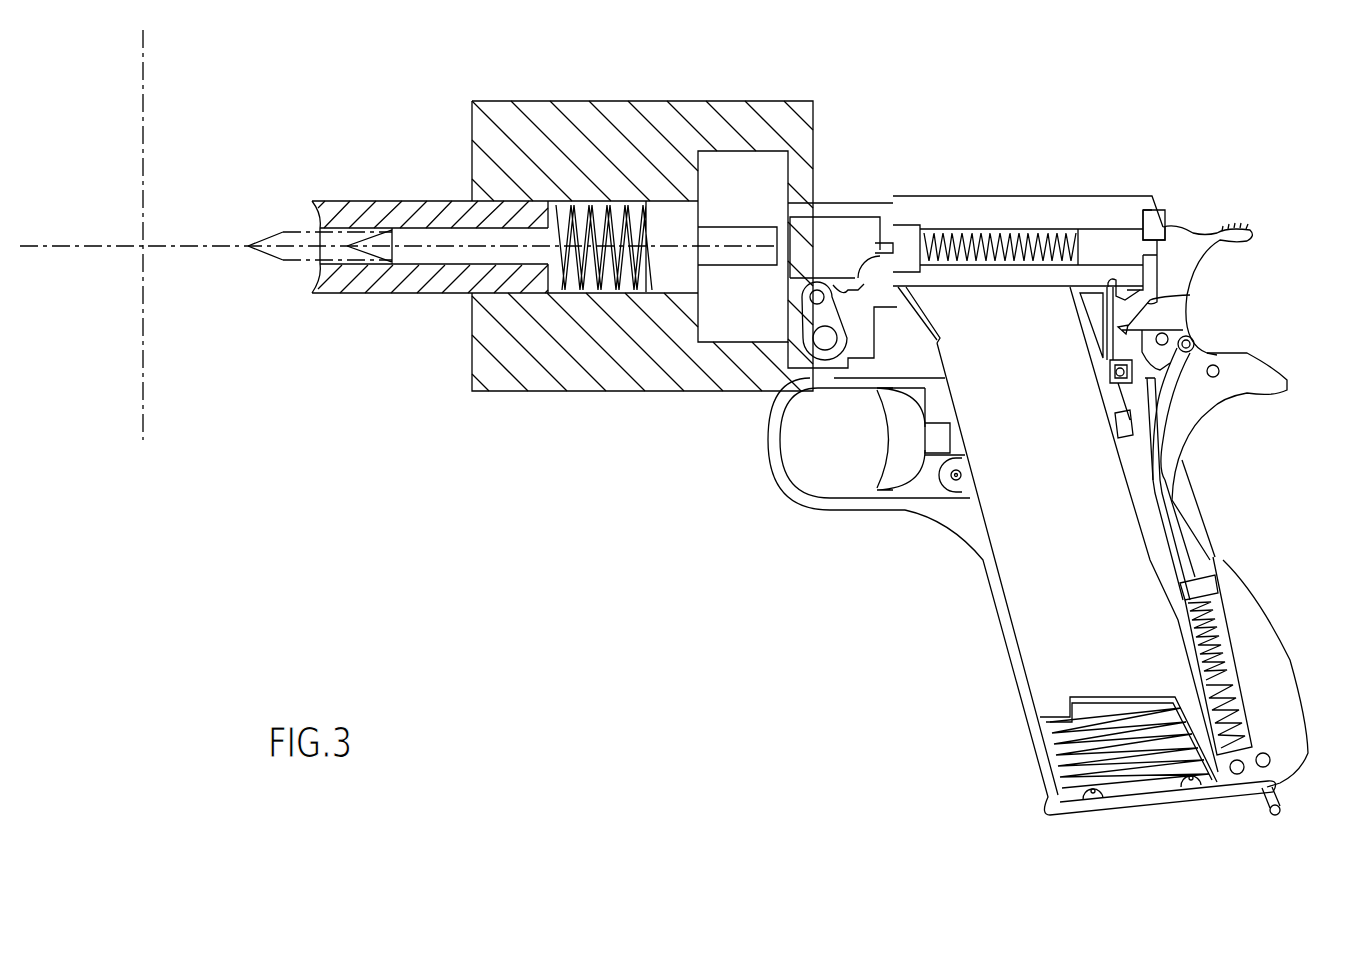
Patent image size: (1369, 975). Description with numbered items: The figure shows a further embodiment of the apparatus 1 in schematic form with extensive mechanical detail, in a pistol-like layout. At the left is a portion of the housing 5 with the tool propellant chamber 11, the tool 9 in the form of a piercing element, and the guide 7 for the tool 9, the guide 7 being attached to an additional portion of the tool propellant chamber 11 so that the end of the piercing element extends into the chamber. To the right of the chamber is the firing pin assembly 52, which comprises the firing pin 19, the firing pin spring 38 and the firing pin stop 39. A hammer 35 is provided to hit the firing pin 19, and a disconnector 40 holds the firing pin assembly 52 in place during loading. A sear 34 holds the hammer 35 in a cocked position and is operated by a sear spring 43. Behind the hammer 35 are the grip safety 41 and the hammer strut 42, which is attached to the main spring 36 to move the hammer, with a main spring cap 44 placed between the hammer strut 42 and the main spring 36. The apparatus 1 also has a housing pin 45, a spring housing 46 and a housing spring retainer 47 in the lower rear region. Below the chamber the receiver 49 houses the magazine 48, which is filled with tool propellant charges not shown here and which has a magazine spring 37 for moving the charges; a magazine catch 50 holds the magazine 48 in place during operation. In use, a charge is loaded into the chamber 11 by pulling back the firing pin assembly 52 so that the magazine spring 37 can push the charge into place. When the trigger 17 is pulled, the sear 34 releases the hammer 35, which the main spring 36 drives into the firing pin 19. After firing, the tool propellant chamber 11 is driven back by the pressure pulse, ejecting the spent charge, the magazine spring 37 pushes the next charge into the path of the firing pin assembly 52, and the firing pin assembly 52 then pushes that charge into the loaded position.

The apparatus 1 is at (707, 441).
The housing 5 is at (612, 105).
The guide 7 is at (360, 290).
The tool 9 is at (430, 230).
The tool propellant chamber 11 is at (825, 232).
The trigger 17 is at (895, 435).
The firing pin 19 is at (1108, 235).
The sear 34 is at (1187, 333).
The hammer 35 is at (1228, 243).
The main spring 36 is at (1230, 690).
The magazine spring 37 is at (1140, 790).
The firing pin spring 38 is at (965, 240).
The firing pin stop 39 is at (1155, 220).
The disconnector 40 is at (1127, 307).
The grip safety 41 is at (1242, 400).
The hammer strut 42 is at (1163, 460).
The sear spring 43 is at (1155, 485).
The main spring cap 44 is at (1212, 592).
The housing pin 45 is at (1240, 775).
The spring housing 46 is at (1292, 752).
The housing spring retainer 47 is at (1223, 727).
The magazine 48 is at (1022, 672).
The receiver 49 is at (1000, 613).
The magazine catch 50 is at (950, 490).
The firing pin assembly 52 is at (1030, 215).